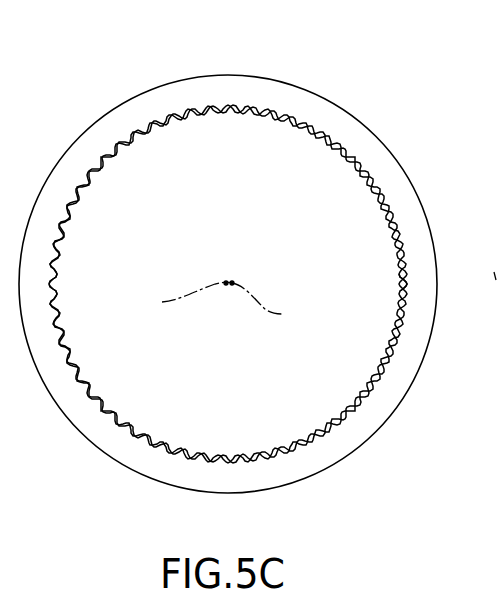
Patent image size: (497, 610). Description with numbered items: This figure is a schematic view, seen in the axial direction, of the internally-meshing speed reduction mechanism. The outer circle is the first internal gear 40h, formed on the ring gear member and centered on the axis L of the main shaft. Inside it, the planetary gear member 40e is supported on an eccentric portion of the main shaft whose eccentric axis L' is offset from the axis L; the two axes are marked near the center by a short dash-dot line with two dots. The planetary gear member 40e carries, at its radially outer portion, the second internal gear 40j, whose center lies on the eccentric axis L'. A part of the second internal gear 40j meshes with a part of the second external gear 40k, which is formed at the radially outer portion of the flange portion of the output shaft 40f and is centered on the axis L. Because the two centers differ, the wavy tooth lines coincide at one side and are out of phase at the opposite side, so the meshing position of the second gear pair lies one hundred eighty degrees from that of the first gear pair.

The planetary gear member 40e is at (332, 115).
The output shaft 40f is at (241, 140).
The second internal gear 40j is at (393, 225).
The second external gear 40k is at (403, 285).
The first internal gear 40h is at (496, 257).
The axis L is at (264, 305).
The eccentric axis L' is at (187, 295).